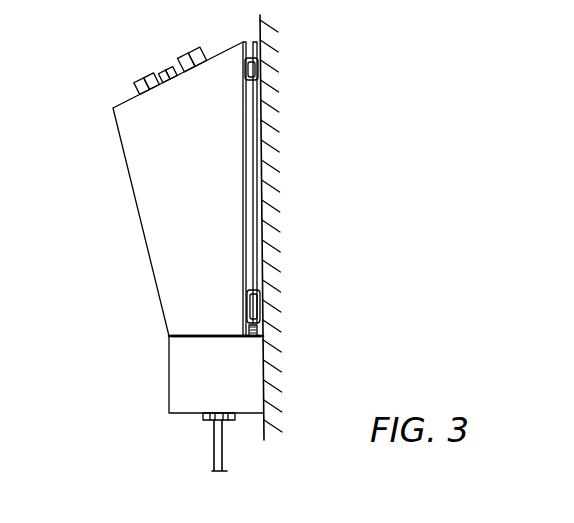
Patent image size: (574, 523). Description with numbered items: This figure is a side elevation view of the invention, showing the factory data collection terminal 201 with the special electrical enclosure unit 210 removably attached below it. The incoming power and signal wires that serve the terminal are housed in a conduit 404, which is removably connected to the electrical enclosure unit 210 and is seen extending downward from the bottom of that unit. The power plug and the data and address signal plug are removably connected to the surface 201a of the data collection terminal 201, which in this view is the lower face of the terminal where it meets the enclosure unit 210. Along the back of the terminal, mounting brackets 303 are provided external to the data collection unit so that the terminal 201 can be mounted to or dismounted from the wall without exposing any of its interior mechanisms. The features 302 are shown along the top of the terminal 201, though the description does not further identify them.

The factory data collection terminal 201 is at (139, 218).
The surface of data collection terminal unit 201a is at (200, 335).
The electrical enclosure unit 210 is at (169, 358).
The connectors 302 is at (172, 68).
The mounting brackets 303 is at (262, 55).
The conduit 404 is at (213, 438).